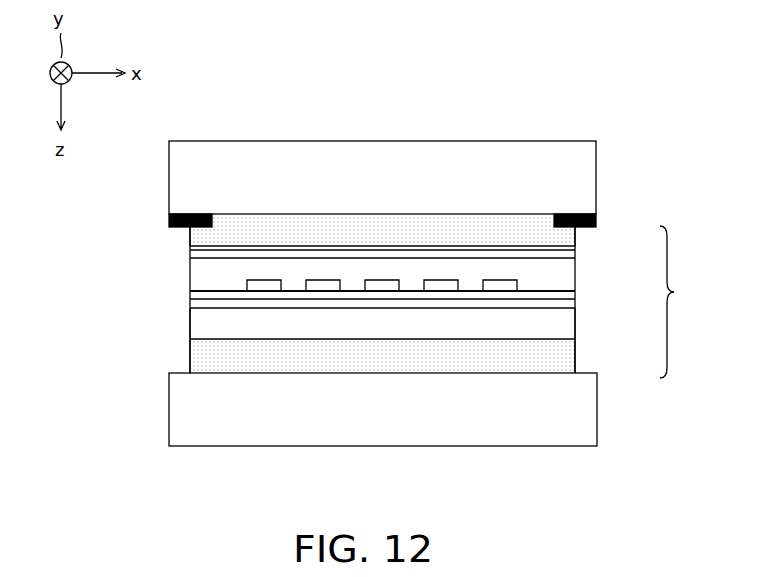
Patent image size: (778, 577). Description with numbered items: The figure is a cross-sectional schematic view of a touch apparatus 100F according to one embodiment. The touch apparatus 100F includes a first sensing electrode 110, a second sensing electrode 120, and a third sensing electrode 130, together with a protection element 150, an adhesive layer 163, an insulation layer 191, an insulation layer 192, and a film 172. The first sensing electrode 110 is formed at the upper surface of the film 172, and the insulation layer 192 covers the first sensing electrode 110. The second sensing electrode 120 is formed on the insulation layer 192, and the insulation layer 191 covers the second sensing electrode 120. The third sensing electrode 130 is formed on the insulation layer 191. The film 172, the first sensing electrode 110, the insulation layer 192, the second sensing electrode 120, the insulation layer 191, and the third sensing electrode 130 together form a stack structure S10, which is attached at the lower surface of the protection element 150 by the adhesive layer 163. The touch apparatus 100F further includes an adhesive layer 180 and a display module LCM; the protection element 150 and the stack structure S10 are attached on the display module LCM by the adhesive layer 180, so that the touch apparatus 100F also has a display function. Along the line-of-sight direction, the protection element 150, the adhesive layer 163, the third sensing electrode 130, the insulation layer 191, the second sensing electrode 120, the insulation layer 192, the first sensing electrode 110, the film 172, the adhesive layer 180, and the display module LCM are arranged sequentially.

The protection element 150 is at (585, 166).
The adhesive layer 163 is at (200, 234).
The third sensing electrode 130 is at (573, 253).
The insulation layer 191 is at (565, 273).
The second sensing electrode 120 is at (517, 286).
The insulation layer 192 is at (567, 304).
The first sensing electrode 110 is at (570, 333).
The film 172 is at (574, 342).
The adhesive layer 180 is at (200, 359).
The stack structure S10 is at (690, 302).
The display module LCM is at (585, 411).
The touch apparatus 100F is at (718, 457).